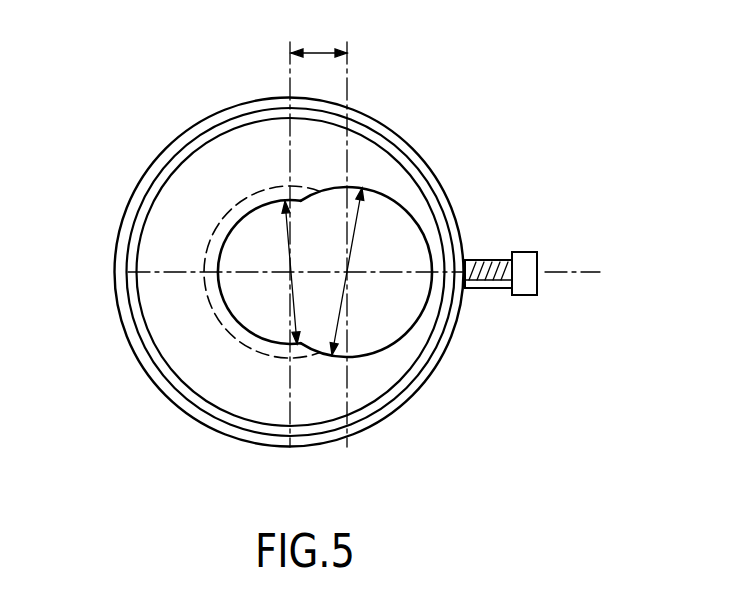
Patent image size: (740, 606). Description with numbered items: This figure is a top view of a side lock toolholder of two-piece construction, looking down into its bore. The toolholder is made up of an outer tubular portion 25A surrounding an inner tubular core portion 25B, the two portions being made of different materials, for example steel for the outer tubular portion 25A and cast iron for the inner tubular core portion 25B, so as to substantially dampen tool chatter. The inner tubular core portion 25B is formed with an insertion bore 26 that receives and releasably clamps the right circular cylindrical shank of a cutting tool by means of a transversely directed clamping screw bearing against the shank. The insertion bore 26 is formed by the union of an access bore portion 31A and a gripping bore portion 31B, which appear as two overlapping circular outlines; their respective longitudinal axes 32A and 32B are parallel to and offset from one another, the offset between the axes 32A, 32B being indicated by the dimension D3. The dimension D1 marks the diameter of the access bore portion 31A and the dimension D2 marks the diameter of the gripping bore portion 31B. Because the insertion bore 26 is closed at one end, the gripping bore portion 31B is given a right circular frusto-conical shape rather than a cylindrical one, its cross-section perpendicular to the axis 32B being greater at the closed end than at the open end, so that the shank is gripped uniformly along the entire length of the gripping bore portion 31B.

The outer tubular portion 25A is at (422, 382).
The inner tubular core portion 25B is at (182, 333).
The insertion bore 26 is at (316, 221).
The access bore portion 31A is at (385, 243).
The gripping bore portion 31B is at (250, 247).
The longitudinal axis of the access bore portion 32A is at (347, 272).
The longitudinal axis of the gripping bore portion 32B is at (285, 274).
The diameter of first hole portion D1 is at (358, 223).
The diameter of second hole portion D2 is at (290, 306).
The offset between hole centers D3 is at (319, 28).